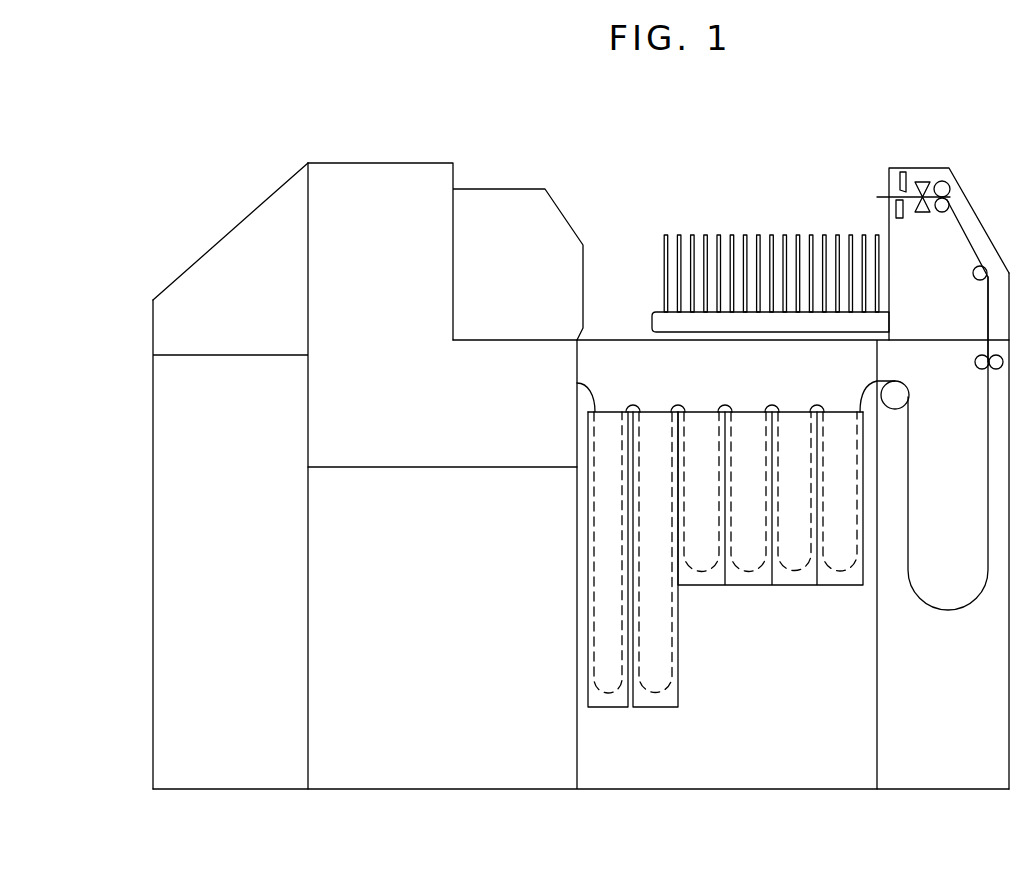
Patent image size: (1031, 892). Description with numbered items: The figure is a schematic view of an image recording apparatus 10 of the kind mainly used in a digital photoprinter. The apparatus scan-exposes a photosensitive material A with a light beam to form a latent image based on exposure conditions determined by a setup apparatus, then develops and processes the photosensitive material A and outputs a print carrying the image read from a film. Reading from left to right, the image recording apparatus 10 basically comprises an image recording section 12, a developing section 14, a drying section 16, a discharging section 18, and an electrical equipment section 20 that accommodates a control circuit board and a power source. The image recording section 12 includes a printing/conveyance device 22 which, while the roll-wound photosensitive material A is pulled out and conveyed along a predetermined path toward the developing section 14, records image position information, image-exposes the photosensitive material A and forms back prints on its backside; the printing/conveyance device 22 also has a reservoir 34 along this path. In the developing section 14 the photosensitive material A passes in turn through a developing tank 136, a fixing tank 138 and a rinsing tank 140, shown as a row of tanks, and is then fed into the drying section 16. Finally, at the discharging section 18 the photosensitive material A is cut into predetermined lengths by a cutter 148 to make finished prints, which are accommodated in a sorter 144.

The image recording apparatus 10 is at (596, 161).
The image recording section 12 is at (212, 209).
The developing section 14 is at (742, 764).
The drying section 16 is at (953, 778).
The discharging section 18 is at (836, 183).
The electrical equipment section 20 is at (176, 563).
The printing/conveyance device 22 is at (376, 180).
The reservoir 34 is at (440, 760).
The developing tank 136 is at (608, 709).
The fixing tank 138 is at (660, 709).
The rinsing tank 140 is at (682, 598).
The sorter 144 is at (748, 220).
The cutter 148 is at (903, 177).
The photosensitive material A is at (907, 540).